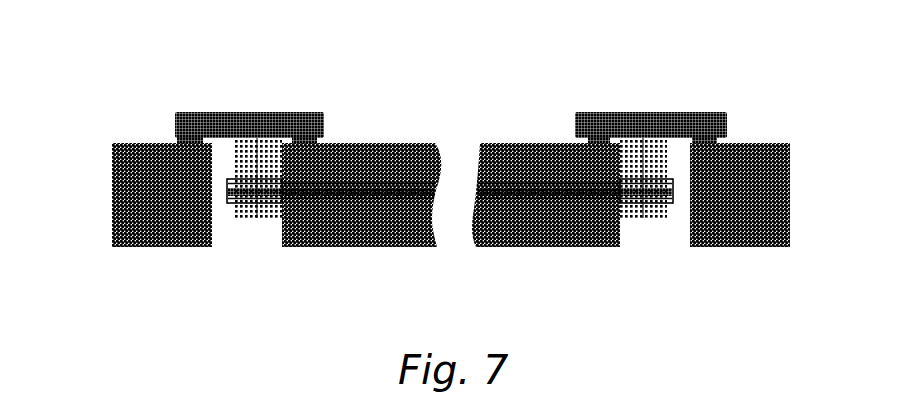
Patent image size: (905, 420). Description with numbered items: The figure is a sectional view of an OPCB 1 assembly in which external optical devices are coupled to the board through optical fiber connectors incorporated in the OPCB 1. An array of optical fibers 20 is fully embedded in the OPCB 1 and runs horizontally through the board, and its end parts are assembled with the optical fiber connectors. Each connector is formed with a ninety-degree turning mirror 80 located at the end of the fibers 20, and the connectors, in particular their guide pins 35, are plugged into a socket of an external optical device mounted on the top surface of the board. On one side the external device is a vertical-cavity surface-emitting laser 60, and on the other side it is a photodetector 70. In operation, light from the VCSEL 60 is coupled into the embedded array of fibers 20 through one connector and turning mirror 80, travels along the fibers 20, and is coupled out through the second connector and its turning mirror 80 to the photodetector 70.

The OPCB 1 is at (104, 164).
The array of optical fibers 20 is at (535, 181).
The guide pins 35 is at (660, 195).
The vertical-cavity surface-emitting laser 60 is at (223, 104).
The photodetector 70 is at (655, 108).
The 90° turning mirror 80 is at (243, 188).